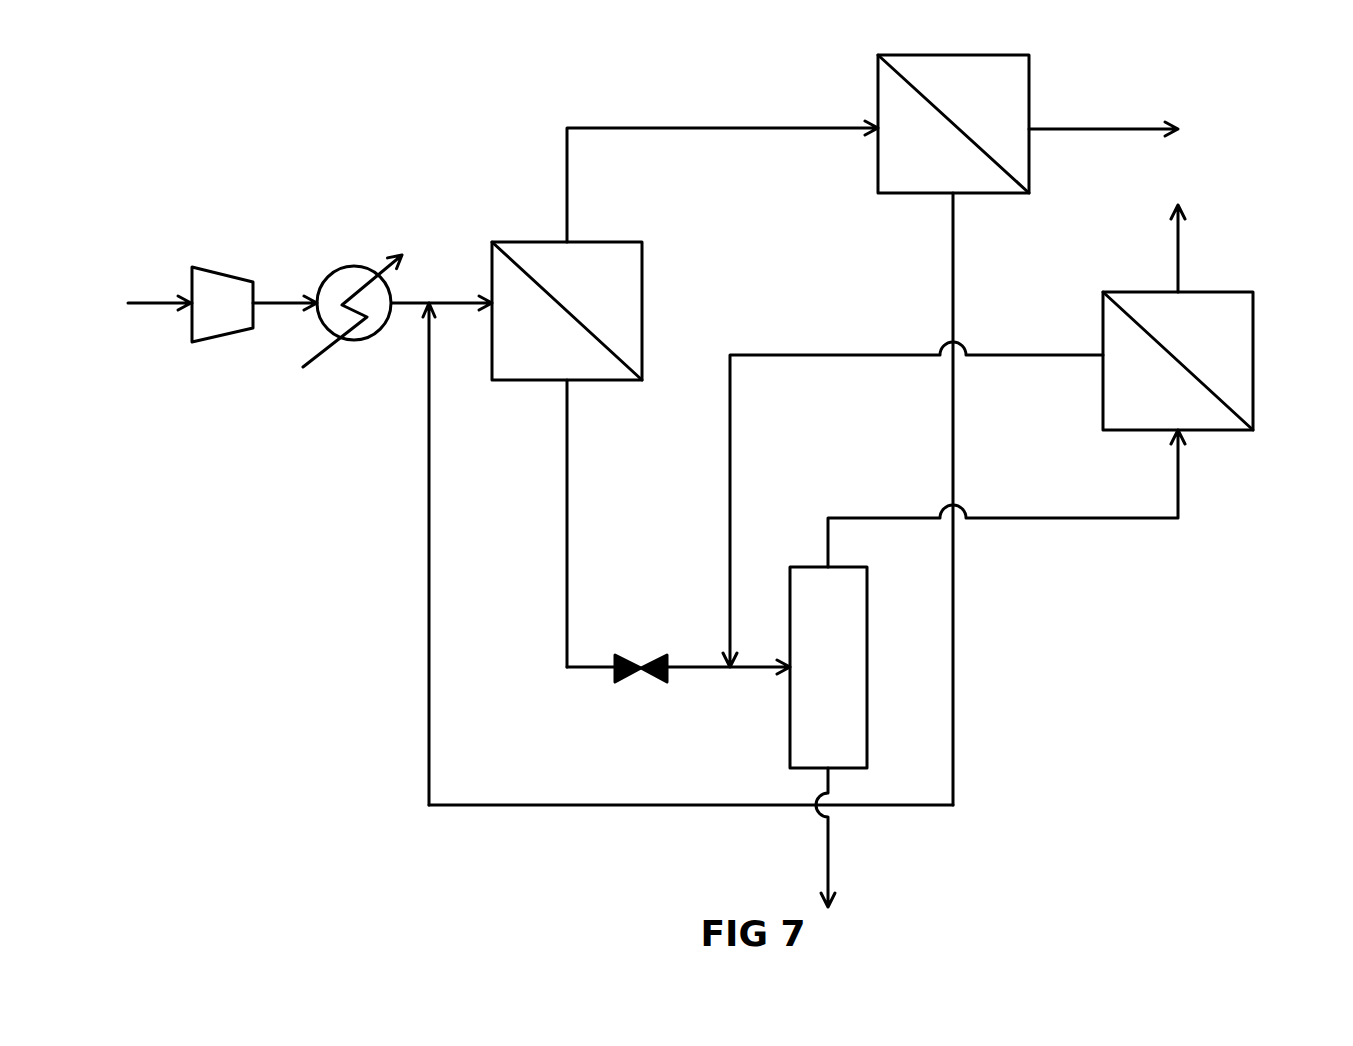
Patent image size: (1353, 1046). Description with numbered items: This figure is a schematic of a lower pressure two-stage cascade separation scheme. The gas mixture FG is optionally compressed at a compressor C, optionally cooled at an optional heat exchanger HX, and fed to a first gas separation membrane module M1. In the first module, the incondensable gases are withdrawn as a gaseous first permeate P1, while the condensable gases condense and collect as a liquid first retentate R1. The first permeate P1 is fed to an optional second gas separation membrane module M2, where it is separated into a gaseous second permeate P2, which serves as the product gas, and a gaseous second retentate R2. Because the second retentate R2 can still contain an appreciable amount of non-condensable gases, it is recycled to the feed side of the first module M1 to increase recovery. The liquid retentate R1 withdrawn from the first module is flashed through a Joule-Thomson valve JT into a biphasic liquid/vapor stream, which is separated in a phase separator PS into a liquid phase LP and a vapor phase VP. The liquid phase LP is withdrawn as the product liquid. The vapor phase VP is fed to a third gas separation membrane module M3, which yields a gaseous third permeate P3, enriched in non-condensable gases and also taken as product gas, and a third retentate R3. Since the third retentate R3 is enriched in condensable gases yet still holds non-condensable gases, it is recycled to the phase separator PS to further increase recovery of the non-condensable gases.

The gas mixture FG is at (153, 305).
The compressor C is at (222, 290).
The heat exchanger HX is at (347, 277).
The first gas separation membrane module M1 is at (547, 268).
The first permeate P1 is at (697, 128).
The second gas separation membrane module M2 is at (915, 155).
The second permeate P2 is at (1086, 129).
The second retentate R2 is at (949, 230).
The third retentate R3 is at (1055, 355).
The third gas separation membrane module M3 is at (1233, 350).
The third permeate P3 is at (1175, 250).
The vapor phase VP is at (888, 518).
The phase separator PS is at (848, 710).
The first retentate R1 is at (565, 533).
The Joule-Thomson valve JT is at (628, 680).
The liquid phase LP is at (830, 850).